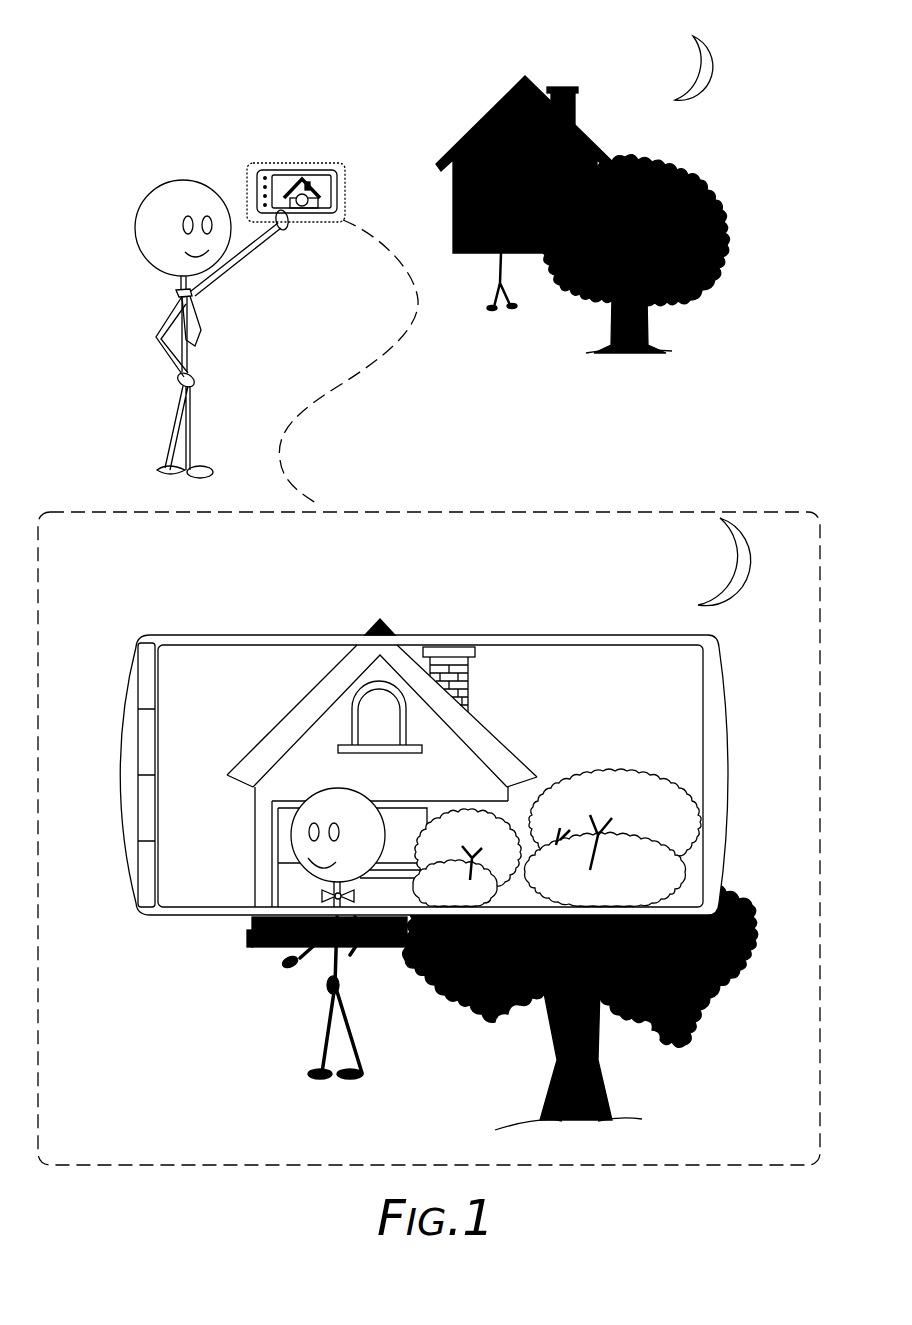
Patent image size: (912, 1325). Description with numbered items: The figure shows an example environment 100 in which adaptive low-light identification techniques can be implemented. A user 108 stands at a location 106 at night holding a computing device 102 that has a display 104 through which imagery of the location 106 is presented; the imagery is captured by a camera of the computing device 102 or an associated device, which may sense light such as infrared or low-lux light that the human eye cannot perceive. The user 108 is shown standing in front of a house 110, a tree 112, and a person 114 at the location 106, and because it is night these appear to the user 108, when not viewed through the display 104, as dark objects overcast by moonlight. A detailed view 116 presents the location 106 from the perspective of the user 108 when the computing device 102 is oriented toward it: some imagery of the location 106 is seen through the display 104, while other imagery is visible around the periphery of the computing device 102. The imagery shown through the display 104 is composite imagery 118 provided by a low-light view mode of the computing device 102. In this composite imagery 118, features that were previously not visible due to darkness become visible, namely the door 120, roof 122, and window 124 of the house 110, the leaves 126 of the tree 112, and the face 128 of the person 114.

The environment 100 is at (109, 41).
The computing device 102 is at (331, 166).
The display 104 is at (589, 641).
The location 106 is at (644, 106).
The user 108 is at (160, 347).
The house 110 is at (565, 85).
The tree 112 is at (647, 153).
The person 114 is at (513, 312).
The detailed view 116 is at (350, 190).
The composite imagery 118 is at (616, 708).
The door 120 is at (269, 834).
The roof 122 is at (287, 706).
The window 124 is at (412, 797).
The leaves 126 is at (598, 762).
The face 128 is at (306, 794).